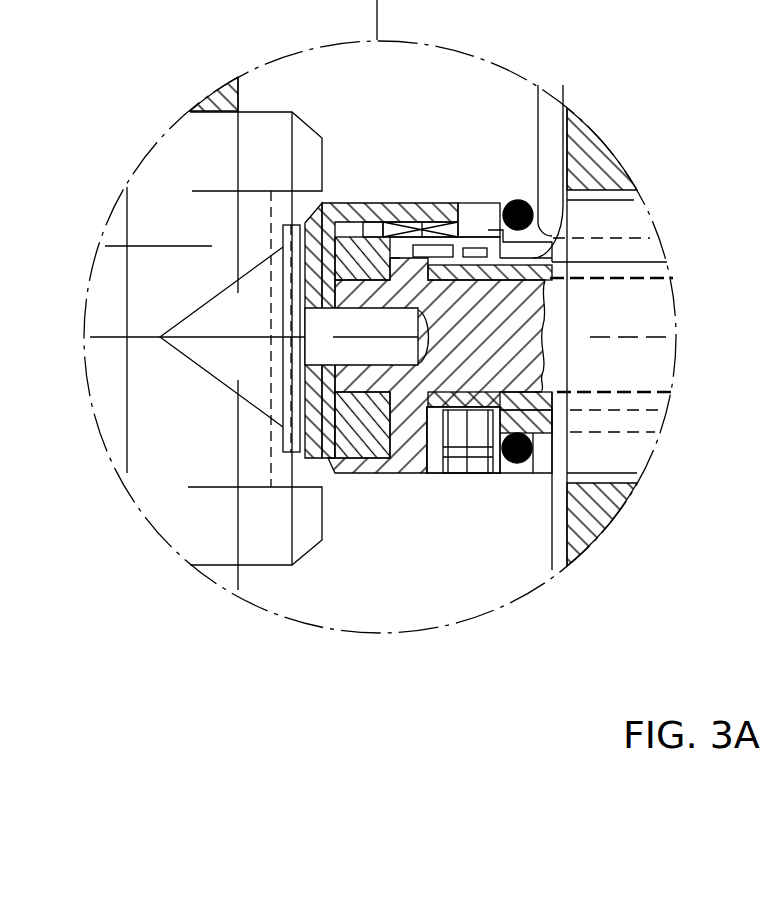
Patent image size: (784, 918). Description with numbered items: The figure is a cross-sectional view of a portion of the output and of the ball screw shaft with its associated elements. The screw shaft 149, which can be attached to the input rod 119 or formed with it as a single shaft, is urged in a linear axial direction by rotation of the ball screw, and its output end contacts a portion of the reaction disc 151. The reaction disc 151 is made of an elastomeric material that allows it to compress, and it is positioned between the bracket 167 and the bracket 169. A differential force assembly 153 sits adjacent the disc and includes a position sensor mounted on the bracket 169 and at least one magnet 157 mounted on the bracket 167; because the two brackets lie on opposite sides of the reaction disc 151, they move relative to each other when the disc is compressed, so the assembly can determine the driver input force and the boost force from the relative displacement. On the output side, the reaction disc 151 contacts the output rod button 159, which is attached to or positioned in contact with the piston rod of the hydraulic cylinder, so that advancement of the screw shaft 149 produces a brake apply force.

The input rod 119 is at (650, 318).
The screw shaft 149 is at (653, 268).
The reaction disc 151 is at (370, 455).
The differential force assembly 153 is at (450, 198).
The magnet 157 is at (372, 203).
The output rod button 159 is at (282, 452).
The bracket 167 is at (318, 463).
The bracket 169 is at (410, 468).